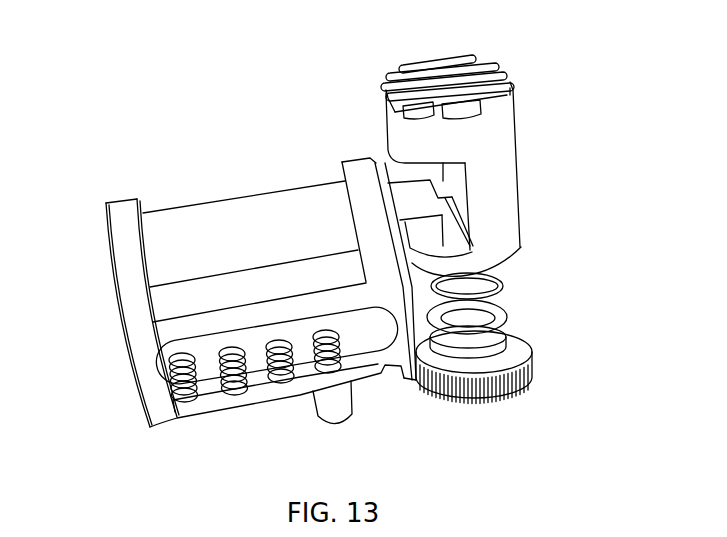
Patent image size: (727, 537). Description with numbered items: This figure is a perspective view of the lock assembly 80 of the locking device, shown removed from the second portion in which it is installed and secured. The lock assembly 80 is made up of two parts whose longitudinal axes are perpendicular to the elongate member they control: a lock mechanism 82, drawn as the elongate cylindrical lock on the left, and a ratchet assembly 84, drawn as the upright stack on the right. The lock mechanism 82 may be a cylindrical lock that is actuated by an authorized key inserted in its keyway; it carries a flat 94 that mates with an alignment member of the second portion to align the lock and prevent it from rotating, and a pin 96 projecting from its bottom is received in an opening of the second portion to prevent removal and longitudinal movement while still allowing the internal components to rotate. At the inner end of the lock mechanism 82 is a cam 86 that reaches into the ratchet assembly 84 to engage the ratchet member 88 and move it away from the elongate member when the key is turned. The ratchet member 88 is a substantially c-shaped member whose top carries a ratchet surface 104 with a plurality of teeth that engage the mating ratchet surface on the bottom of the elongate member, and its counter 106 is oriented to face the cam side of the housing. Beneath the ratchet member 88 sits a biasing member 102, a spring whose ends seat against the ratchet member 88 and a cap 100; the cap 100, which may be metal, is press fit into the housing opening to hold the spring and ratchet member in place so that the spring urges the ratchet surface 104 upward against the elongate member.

The lock assembly 80 is at (92, 170).
The lock mechanism 82 is at (205, 192).
The ratchet assembly 84 is at (536, 216).
The cam 86 is at (440, 230).
The ratchet member 88 is at (513, 158).
The flat 94 is at (358, 177).
The pin 96 is at (338, 415).
The cap 100 is at (534, 379).
The biasing member 102 is at (507, 313).
The ratchet surface 104 is at (503, 70).
The counter 106 is at (423, 172).